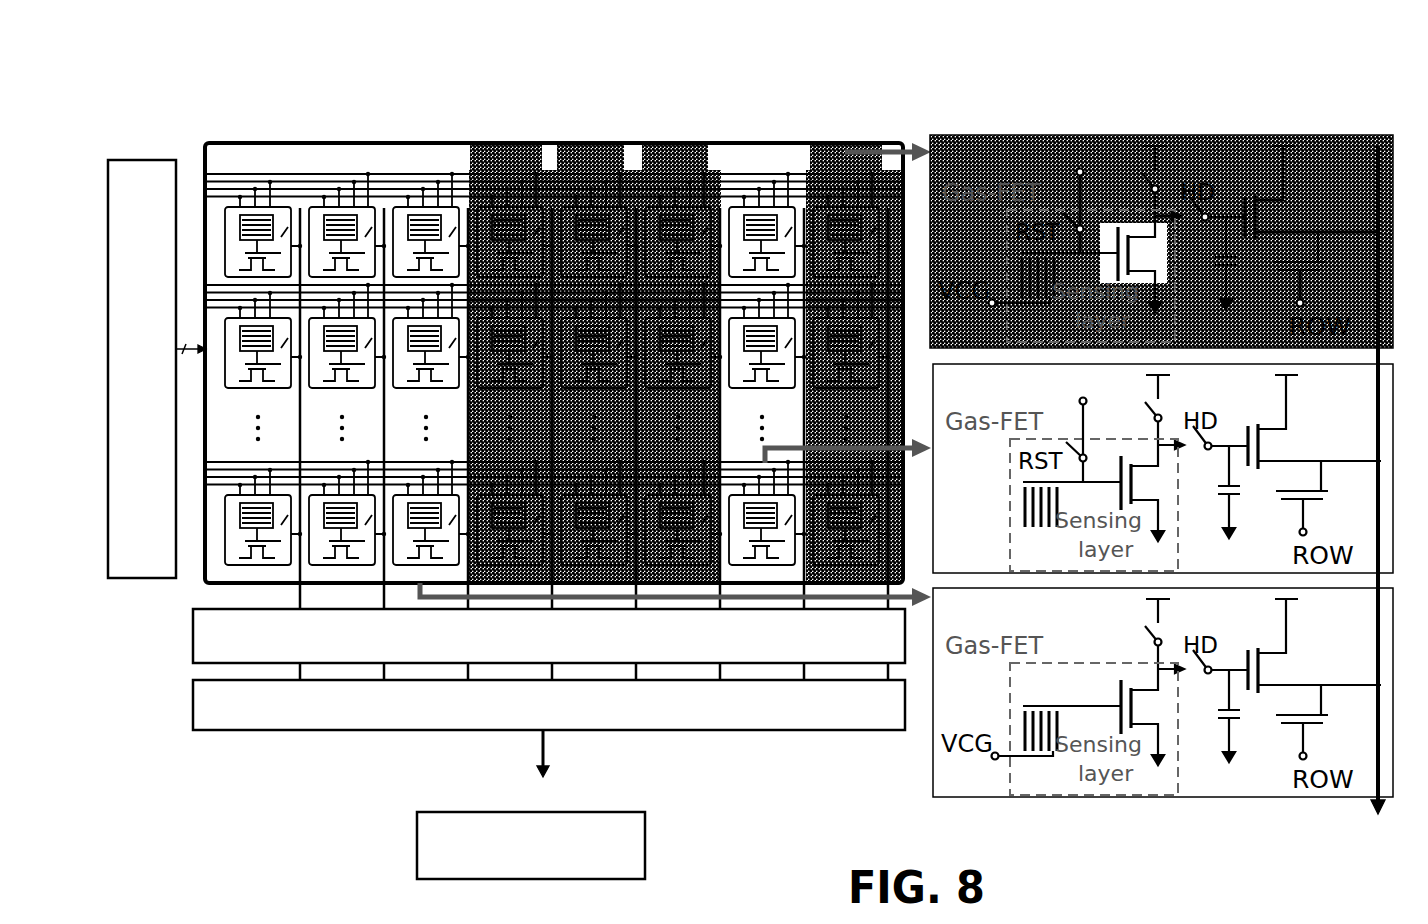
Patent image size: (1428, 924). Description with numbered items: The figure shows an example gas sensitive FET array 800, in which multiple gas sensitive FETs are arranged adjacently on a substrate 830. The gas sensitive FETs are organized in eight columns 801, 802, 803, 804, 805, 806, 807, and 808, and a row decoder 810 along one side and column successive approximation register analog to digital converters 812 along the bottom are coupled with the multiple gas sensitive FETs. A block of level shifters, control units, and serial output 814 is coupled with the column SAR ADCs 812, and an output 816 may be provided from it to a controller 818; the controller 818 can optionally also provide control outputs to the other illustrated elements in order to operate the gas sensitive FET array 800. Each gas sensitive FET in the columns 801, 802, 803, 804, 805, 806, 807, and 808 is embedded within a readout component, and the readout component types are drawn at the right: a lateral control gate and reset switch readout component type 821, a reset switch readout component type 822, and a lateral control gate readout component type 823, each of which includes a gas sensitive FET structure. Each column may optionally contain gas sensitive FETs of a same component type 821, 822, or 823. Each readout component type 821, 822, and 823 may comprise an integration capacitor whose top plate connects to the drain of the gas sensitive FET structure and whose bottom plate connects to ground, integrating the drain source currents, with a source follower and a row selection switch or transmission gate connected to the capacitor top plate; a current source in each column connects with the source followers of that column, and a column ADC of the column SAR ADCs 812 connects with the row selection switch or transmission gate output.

The gas sensitive FET array 800 is at (856, 54).
The column 801 is at (259, 124).
The column 802 is at (338, 124).
The column 803 is at (422, 124).
The column 804 is at (510, 124).
The column 805 is at (592, 124).
The column 806 is at (676, 124).
The column 807 is at (765, 124).
The column 808 is at (848, 124).
The row decoder 810 is at (142, 369).
The column successive approximation register analog to digital converters 812 is at (549, 636).
The level shifters, control units, and serial output 814 is at (549, 705).
The output 816 is at (535, 767).
The controller 818 is at (531, 845).
The lateral control gate and reset switch readout component type 821 is at (1161, 241).
The reset switch readout component type 822 is at (1163, 468).
The lateral control gate readout component type 823 is at (1163, 692).
The substrate 830 is at (212, 152).